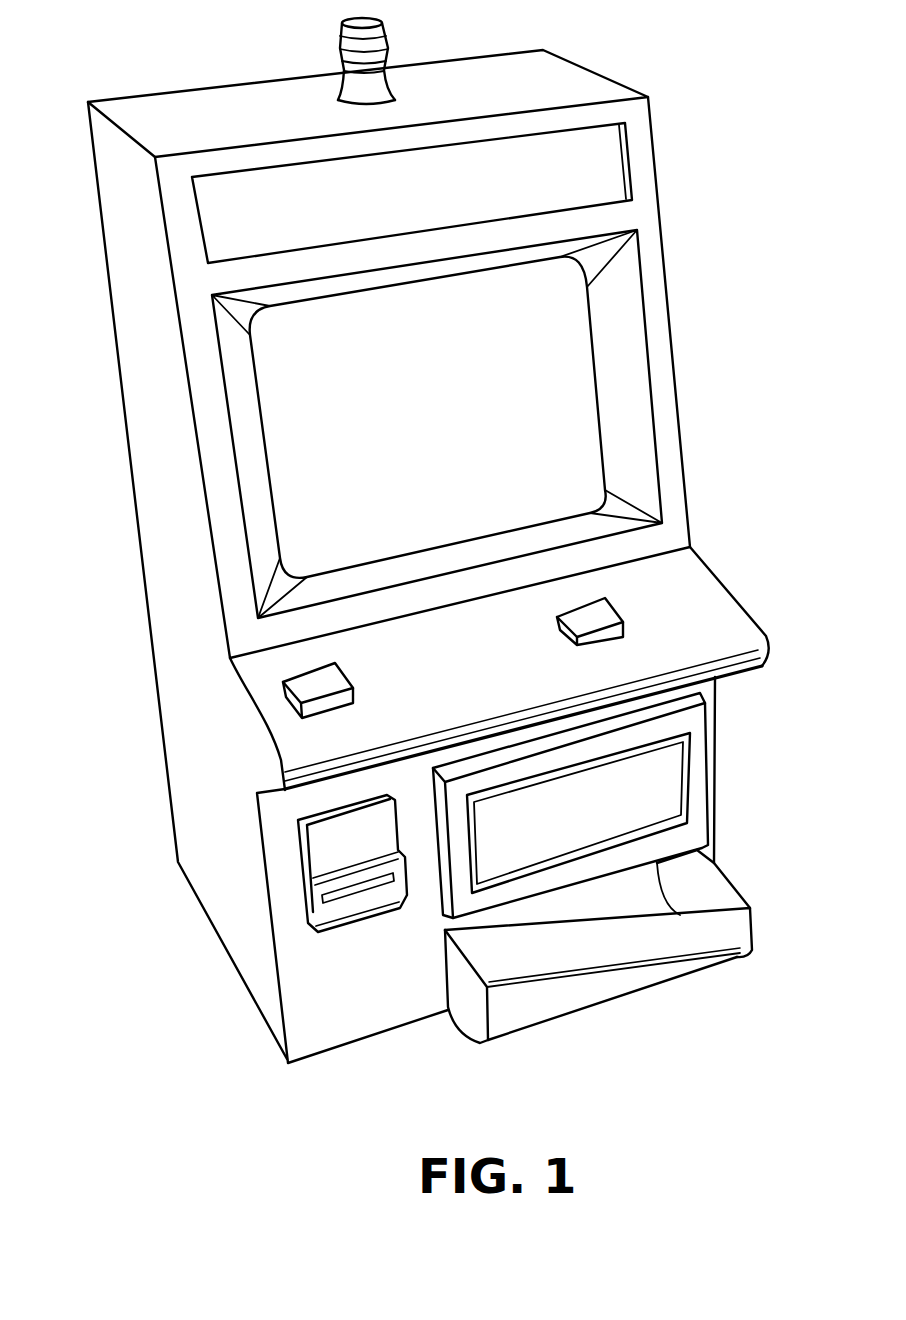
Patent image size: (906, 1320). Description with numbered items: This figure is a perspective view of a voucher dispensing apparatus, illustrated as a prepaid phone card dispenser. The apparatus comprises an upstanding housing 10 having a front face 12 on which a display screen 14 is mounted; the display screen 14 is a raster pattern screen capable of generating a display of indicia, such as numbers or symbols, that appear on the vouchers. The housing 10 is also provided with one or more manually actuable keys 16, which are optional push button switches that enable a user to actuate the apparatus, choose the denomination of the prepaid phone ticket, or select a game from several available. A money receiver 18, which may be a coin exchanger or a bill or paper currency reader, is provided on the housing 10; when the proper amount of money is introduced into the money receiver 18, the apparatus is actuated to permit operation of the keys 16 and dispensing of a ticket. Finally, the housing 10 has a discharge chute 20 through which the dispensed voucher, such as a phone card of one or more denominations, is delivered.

The housing 10 is at (130, 320).
The front face 12 is at (600, 162).
The display screen 14 is at (578, 368).
The manually actuable keys 16 is at (607, 608).
The money receiver 18 is at (338, 932).
The discharge chute 20 is at (693, 897).